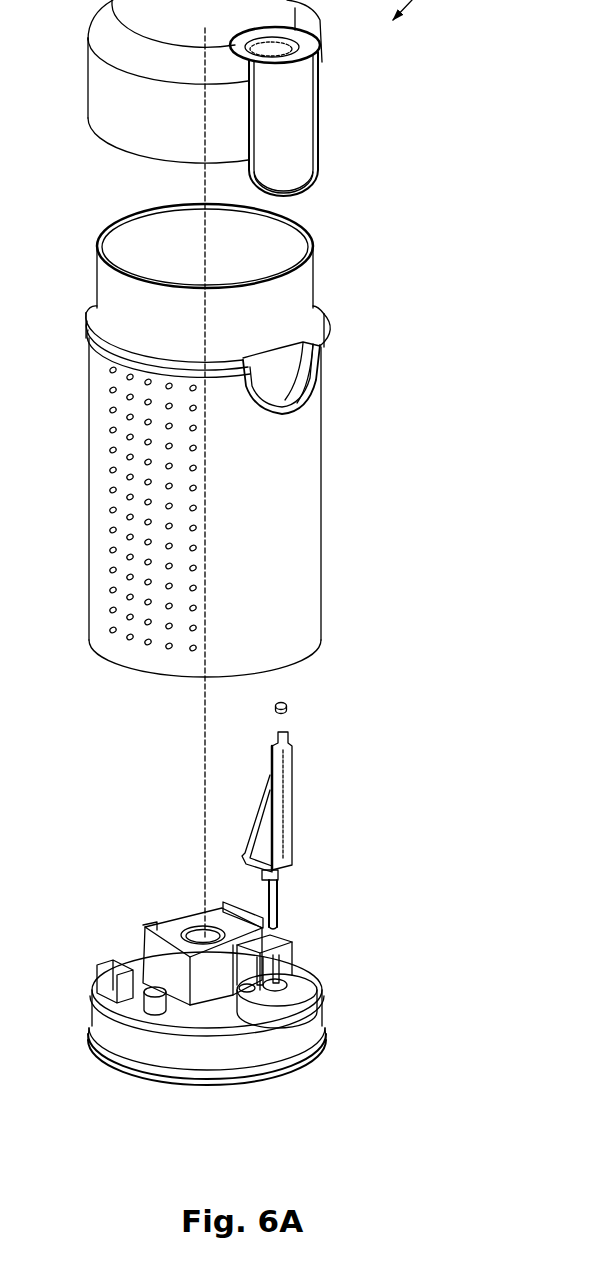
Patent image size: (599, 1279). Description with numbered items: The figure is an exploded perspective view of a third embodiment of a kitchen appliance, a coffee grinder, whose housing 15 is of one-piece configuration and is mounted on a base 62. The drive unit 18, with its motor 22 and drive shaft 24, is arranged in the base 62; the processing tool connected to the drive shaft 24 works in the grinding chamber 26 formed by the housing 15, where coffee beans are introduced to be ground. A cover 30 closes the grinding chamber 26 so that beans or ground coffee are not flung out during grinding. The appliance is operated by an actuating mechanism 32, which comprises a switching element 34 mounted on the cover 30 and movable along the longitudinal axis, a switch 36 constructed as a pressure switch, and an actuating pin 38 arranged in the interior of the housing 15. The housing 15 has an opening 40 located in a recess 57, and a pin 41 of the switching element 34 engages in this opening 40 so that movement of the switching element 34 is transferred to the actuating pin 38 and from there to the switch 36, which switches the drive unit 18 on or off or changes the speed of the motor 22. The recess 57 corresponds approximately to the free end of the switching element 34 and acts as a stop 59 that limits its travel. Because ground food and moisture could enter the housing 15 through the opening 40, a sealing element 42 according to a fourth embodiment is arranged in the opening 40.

The housing 15 is at (122, 640).
The drive unit 18 is at (151, 921).
The motor 22 is at (151, 921).
The drive shaft 24 is at (192, 903).
The grinding chamber 26 is at (183, 235).
The cover 30 is at (120, 124).
The actuating mechanism 32 is at (328, 527).
The switching element 34 is at (300, 130).
The switch 36 is at (272, 966).
The actuating pin 38 is at (285, 822).
The opening 40 is at (270, 404).
The pin 41 is at (278, 197).
The sealing element 42 is at (292, 704).
The recess 57 is at (283, 341).
The stop 59 is at (342, 365).
The base 62 is at (298, 1040).